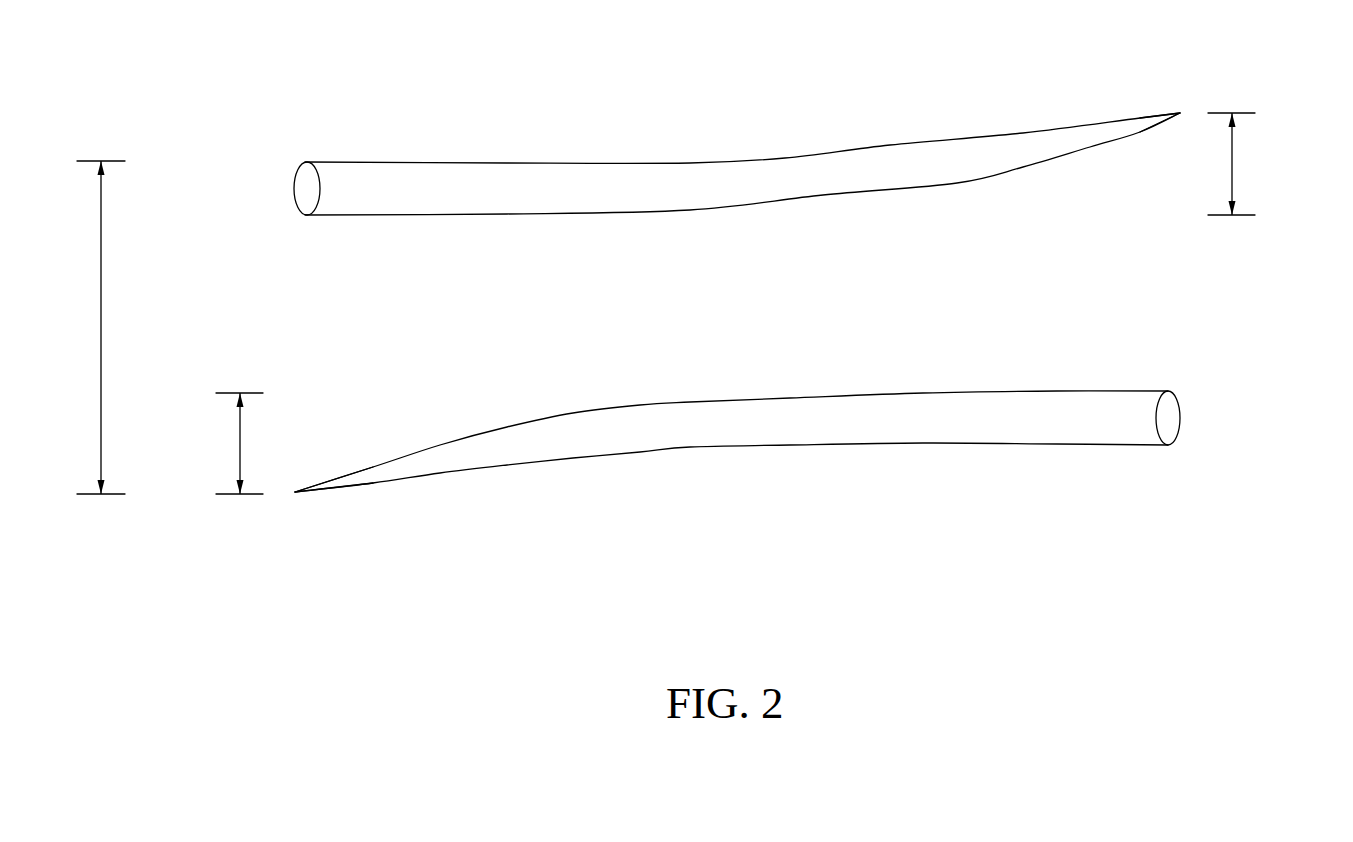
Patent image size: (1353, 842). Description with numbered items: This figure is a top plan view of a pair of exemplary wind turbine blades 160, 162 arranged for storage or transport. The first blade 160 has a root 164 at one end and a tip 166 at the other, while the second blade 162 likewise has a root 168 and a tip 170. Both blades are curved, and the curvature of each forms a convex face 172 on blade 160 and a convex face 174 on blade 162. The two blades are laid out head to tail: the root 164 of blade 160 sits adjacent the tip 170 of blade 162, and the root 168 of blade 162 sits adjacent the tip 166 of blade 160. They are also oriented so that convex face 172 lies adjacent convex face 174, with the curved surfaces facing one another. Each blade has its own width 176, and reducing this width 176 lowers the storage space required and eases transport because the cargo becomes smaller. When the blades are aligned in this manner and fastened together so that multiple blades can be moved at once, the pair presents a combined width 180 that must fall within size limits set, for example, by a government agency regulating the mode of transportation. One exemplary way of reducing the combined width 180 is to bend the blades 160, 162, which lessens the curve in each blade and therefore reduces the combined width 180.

The wind turbine blade 160 is at (725, 143).
The wind turbine blade 162 is at (747, 453).
The root 164 is at (298, 170).
The tip 166 is at (1162, 112).
The root 168 is at (1178, 398).
The tip 170 is at (298, 495).
The convex face 172 is at (962, 185).
The convex face 174 is at (600, 408).
The width 176 is at (238, 443).
The combined width 180 is at (101, 280).